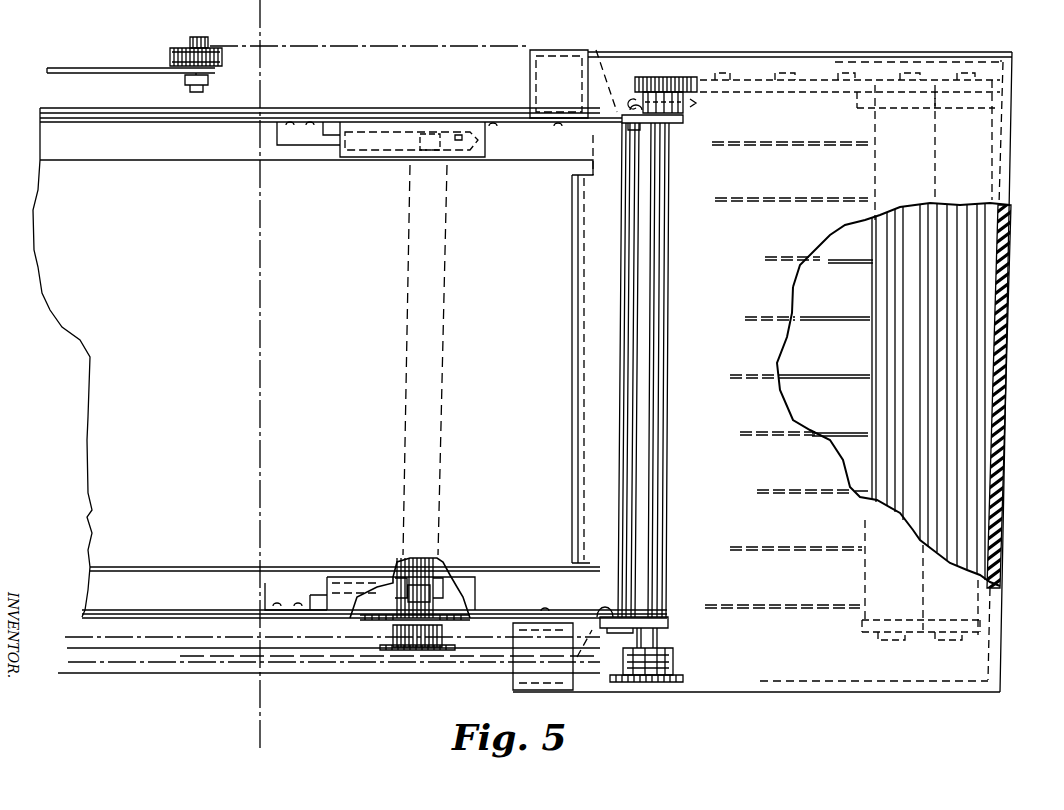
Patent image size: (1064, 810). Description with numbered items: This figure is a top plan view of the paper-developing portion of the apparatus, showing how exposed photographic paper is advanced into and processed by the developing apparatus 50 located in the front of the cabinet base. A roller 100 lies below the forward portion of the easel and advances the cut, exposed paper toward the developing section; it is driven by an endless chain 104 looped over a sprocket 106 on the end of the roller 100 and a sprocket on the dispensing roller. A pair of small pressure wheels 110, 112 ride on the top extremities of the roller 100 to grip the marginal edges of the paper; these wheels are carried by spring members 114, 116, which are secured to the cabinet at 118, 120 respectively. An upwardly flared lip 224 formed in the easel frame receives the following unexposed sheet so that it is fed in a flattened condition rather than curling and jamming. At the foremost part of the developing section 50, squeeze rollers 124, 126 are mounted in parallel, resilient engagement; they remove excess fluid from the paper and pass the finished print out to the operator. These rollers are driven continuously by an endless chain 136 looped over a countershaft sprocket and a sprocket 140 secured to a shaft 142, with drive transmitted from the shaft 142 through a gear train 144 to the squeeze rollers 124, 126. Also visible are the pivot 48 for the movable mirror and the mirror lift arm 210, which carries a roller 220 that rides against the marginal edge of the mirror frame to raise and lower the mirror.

The pivot 48 is at (624, 328).
The developing apparatus 50 is at (1018, 391).
The roller 100 is at (408, 264).
The endless chain 104 is at (330, 642).
The sprocket 106 is at (446, 650).
The pressure wheel 110 is at (417, 592).
The pressure wheel 112 is at (440, 120).
The spring member 114 is at (303, 588).
The spring member 116 is at (316, 150).
The cabinet securing point 118 is at (283, 592).
The cabinet securing point 120 is at (297, 130).
The squeeze roller 124 is at (880, 407).
The squeeze roller 126 is at (960, 470).
The endless chain 136 is at (318, 676).
The sprocket 140 is at (683, 680).
The shaft 142 is at (656, 357).
The gear train 144 is at (854, 69).
The mirror lift arm 210 is at (90, 56).
The roller 220 is at (172, 60).
The upwardly flared lip 224 is at (590, 263).